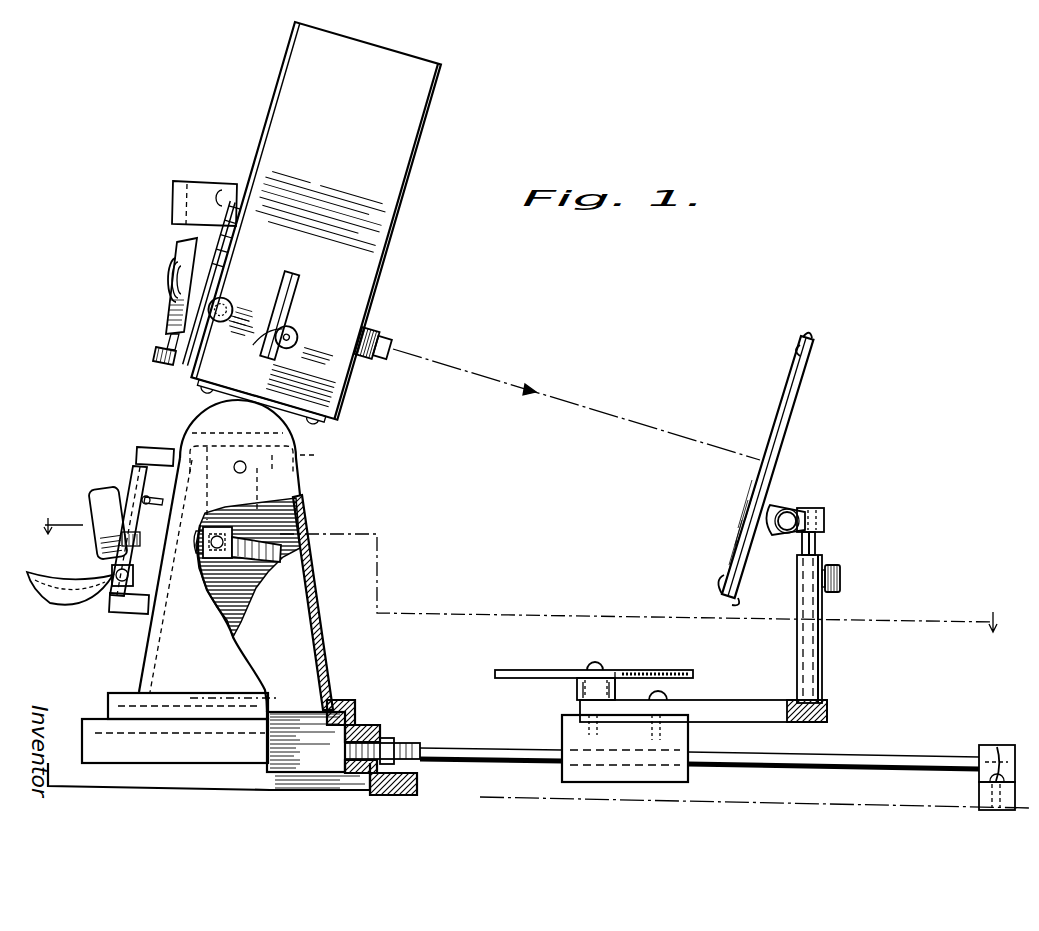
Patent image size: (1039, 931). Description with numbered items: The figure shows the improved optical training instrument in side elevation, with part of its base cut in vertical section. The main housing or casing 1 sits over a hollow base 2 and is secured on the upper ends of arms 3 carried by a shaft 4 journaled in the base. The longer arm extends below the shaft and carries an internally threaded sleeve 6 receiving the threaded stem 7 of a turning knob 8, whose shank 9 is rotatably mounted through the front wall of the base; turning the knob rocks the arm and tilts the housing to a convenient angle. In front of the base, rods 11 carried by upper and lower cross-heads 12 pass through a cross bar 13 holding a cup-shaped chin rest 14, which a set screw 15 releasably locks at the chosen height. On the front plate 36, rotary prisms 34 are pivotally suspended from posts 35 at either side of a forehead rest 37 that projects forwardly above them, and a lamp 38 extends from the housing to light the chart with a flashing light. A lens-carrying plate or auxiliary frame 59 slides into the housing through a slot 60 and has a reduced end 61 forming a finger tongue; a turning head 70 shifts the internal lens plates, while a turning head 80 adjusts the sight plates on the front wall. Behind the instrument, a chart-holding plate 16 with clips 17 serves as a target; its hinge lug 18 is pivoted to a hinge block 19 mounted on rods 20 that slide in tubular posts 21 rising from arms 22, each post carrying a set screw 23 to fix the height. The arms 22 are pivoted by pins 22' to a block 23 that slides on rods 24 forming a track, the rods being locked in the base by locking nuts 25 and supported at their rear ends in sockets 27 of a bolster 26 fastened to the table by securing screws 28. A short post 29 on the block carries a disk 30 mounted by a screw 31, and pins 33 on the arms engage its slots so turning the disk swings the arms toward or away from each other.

The main housing or casing 1 is at (412, 110).
The hollow base 2 is at (322, 590).
The arms 3 is at (519, 493).
The shaft 4 is at (233, 466).
The internally threaded sleeve 6 is at (218, 527).
The threaded stem 7 is at (272, 562).
The turning knob 8 is at (100, 510).
The shank 9 is at (148, 550).
The rods 11 is at (140, 470).
The cross-heads 12 is at (158, 450).
The cross bar 13 is at (133, 582).
The chin rest 14 is at (60, 598).
The set screw 15 is at (115, 586).
The chart-holding plate 16 is at (808, 391).
The clips 17 is at (797, 344).
The hinge lug 18 is at (783, 510).
The hinge member or block 19 is at (826, 515).
The rods 20 is at (817, 546).
The tubular posts or sleeves 21 is at (822, 690).
The arms 22 is at (703, 699).
The pins 22' is at (694, 693).
The set screw / block 23 is at (843, 578).
The rods 24 is at (846, 756).
The locking nuts 25 is at (394, 744).
The bolster 26 is at (979, 792).
The bearings or sockets 27 is at (979, 748).
The securing screws 28 is at (999, 758).
The lug or short post 29 is at (575, 687).
The disk 30 is at (660, 670).
The screw 31 is at (596, 662).
The pins 33 is at (634, 672).
The rotary prisms 34 is at (170, 285).
The posts 35 is at (232, 200).
The front plate 36 is at (266, 123).
The forehead rest 37 is at (172, 202).
The lamp 38 is at (380, 335).
The lens-carrying plate or auxiliary frame 59 is at (286, 276).
The slot 60 is at (302, 286).
The reduced end 61 is at (268, 330).
The turning head 70 is at (294, 336).
The turning head 80 is at (226, 298).